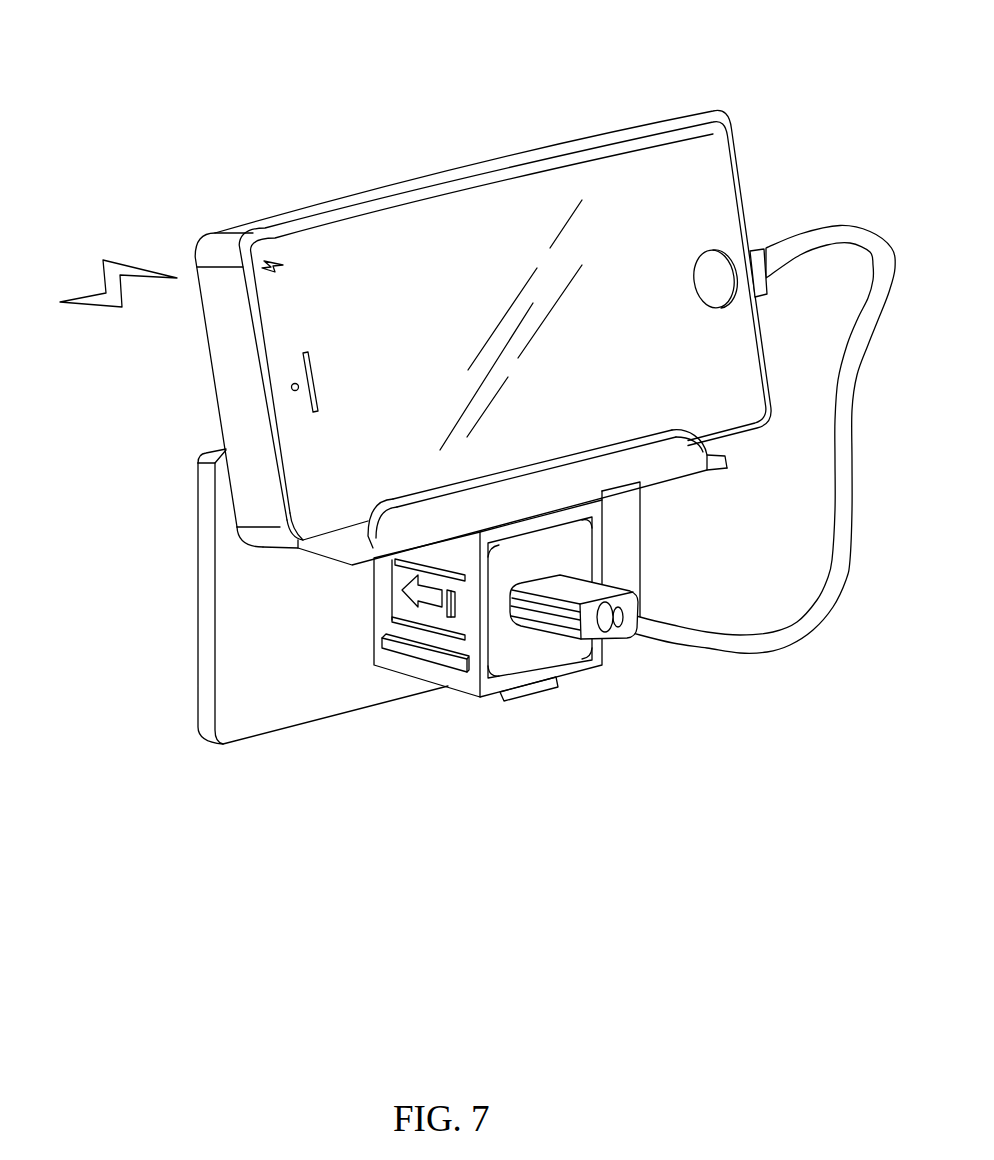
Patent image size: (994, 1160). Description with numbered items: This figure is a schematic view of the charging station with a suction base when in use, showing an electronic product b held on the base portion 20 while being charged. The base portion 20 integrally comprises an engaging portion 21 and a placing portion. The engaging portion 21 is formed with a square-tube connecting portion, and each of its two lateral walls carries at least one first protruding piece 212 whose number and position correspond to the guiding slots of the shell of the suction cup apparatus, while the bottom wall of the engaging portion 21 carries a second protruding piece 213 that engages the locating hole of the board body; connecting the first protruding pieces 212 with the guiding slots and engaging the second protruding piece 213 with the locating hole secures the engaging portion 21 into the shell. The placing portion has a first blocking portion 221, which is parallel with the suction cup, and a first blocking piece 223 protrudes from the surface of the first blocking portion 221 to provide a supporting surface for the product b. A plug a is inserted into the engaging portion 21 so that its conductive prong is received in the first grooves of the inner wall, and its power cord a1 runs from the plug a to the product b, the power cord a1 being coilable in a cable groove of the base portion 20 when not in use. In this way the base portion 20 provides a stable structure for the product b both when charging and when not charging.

The base portion 20 is at (439, 642).
The engaging portion 21 is at (457, 690).
The first protruding piece 212 is at (398, 652).
The second protruding piece 213 is at (532, 697).
The first blocking portion 221 is at (327, 553).
The first blocking piece 223 is at (653, 440).
The plug a is at (550, 645).
The power cord a1 is at (757, 648).
The 3C product b is at (415, 198).